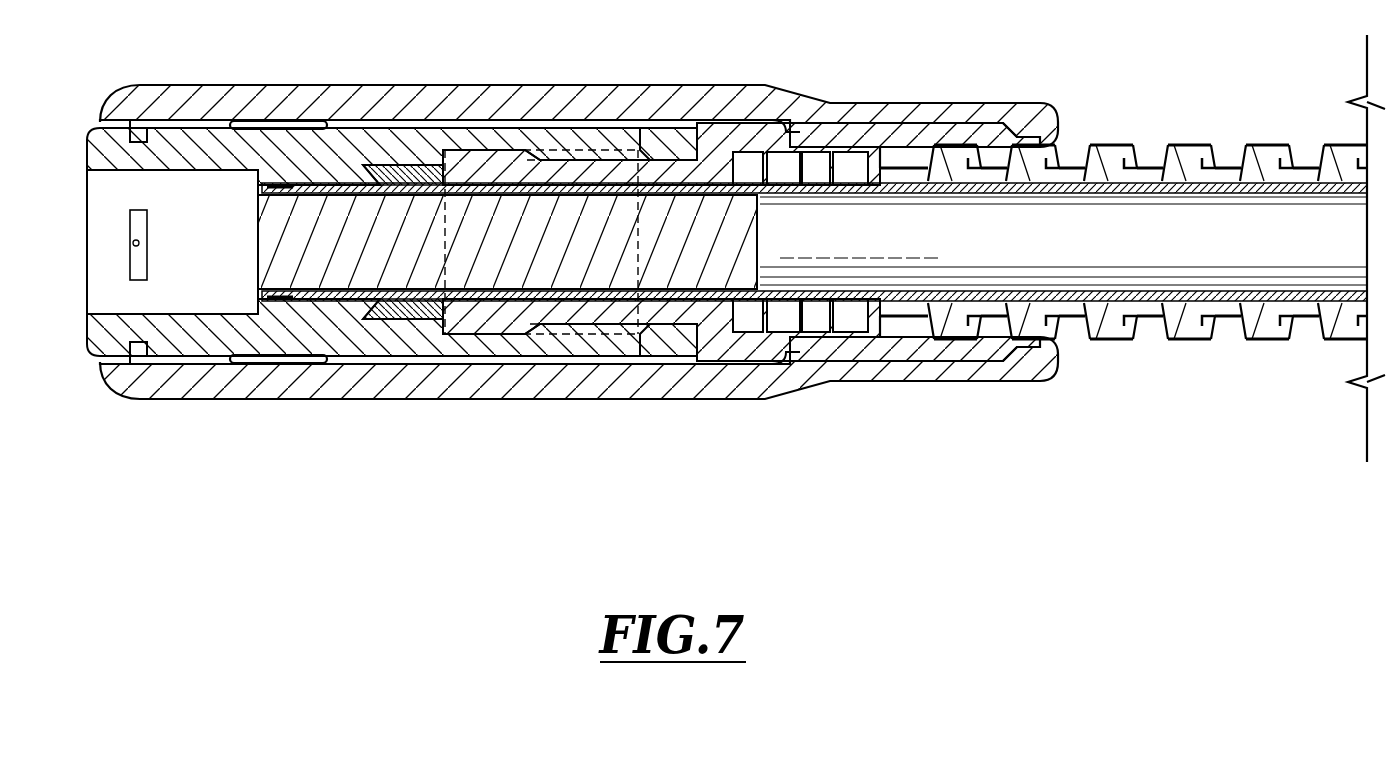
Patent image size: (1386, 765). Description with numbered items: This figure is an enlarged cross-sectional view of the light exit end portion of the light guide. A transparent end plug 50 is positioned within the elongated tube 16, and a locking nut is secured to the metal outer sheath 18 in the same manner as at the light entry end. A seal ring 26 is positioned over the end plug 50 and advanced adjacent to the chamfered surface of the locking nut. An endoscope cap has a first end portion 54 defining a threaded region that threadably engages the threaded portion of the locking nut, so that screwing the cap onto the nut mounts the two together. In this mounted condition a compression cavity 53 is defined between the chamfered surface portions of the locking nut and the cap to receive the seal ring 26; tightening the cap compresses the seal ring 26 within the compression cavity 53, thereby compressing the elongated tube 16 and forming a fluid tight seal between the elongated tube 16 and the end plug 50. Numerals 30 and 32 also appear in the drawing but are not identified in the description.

The elongated tube 16 is at (310, 185).
The outer sheath 18 is at (1107, 145).
The seal ring 26 is at (423, 165).
The nut 30 is at (912, 140).
The key 32 is at (510, 317).
The transparent end plug 50 is at (313, 275).
The compression cavity 53 is at (375, 325).
The first end portion 54 is at (583, 135).